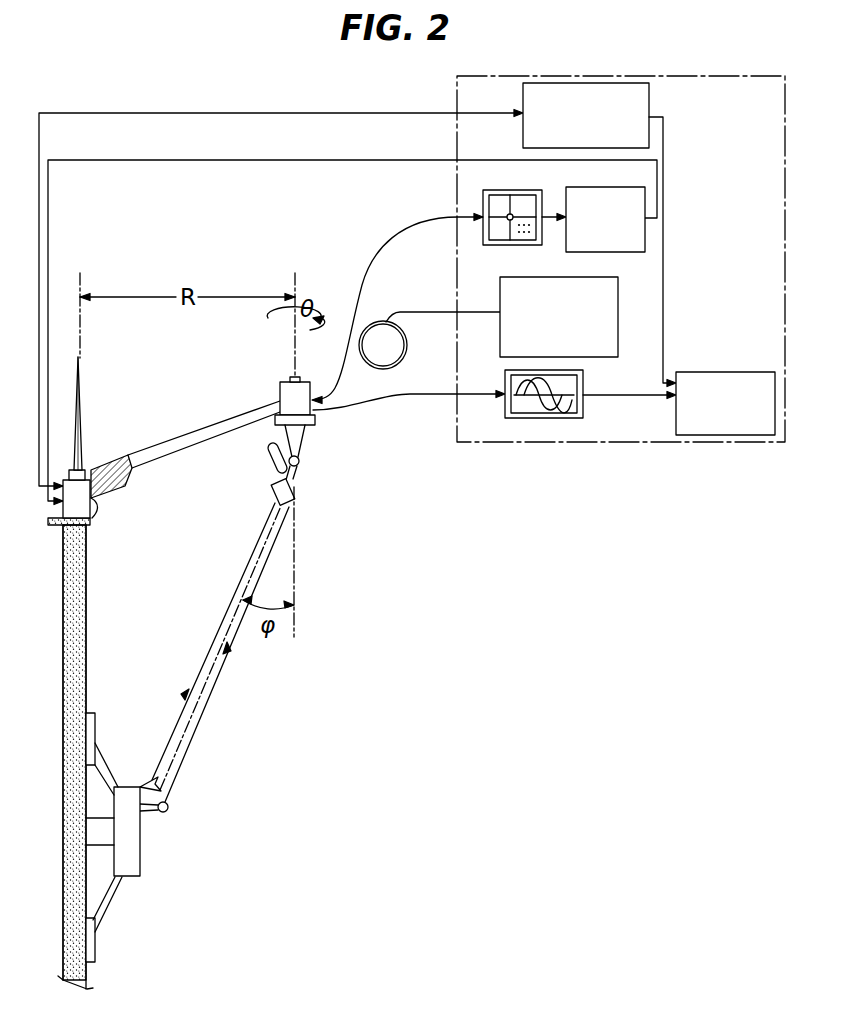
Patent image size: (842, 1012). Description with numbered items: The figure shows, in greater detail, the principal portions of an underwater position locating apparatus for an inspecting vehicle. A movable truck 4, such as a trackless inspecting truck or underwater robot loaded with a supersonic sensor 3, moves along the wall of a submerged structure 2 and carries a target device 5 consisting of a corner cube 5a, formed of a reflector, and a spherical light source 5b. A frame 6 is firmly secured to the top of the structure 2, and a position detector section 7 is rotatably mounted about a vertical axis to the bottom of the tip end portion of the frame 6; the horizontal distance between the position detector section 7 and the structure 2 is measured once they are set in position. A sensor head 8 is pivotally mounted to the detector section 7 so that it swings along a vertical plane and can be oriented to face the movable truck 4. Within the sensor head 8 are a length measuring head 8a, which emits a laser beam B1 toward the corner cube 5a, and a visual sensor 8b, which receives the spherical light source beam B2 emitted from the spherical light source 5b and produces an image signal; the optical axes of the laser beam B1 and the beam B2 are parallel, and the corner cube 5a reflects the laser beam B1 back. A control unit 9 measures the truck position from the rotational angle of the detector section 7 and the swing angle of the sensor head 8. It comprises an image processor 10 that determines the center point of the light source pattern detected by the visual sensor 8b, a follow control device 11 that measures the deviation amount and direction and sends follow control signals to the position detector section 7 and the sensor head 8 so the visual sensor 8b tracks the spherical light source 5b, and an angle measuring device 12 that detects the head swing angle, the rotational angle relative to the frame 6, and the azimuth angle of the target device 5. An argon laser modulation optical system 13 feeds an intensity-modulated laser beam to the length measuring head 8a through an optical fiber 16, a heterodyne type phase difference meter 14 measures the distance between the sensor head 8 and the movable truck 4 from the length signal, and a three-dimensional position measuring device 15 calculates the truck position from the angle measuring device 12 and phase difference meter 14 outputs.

The structure 2 is at (63, 768).
The supersonic sensor 3 is at (98, 845).
The movable truck 4 is at (140, 858).
The target device 5 is at (189, 772).
The corner cube 5a is at (152, 779).
The spherical light source 5b is at (170, 807).
The frame 6 is at (206, 422).
The position detector section 7 is at (315, 423).
The sensor head 8 is at (276, 474).
The length measuring head 8a is at (272, 467).
The visual sensor 8b is at (291, 487).
The control unit 9 is at (708, 75).
The image processor 10 is at (510, 190).
The follow control device 11 is at (630, 187).
The angle measuring device 12 is at (649, 100).
The argon laser modulation optical system 13 is at (618, 300).
The heterodyne type phase difference meter 14 is at (583, 383).
The three-dimensional position measuring device 15 is at (748, 372).
The optical fiber 16 is at (434, 312).
The laser beam B1 is at (200, 662).
The spherical light source beam B2 is at (218, 664).